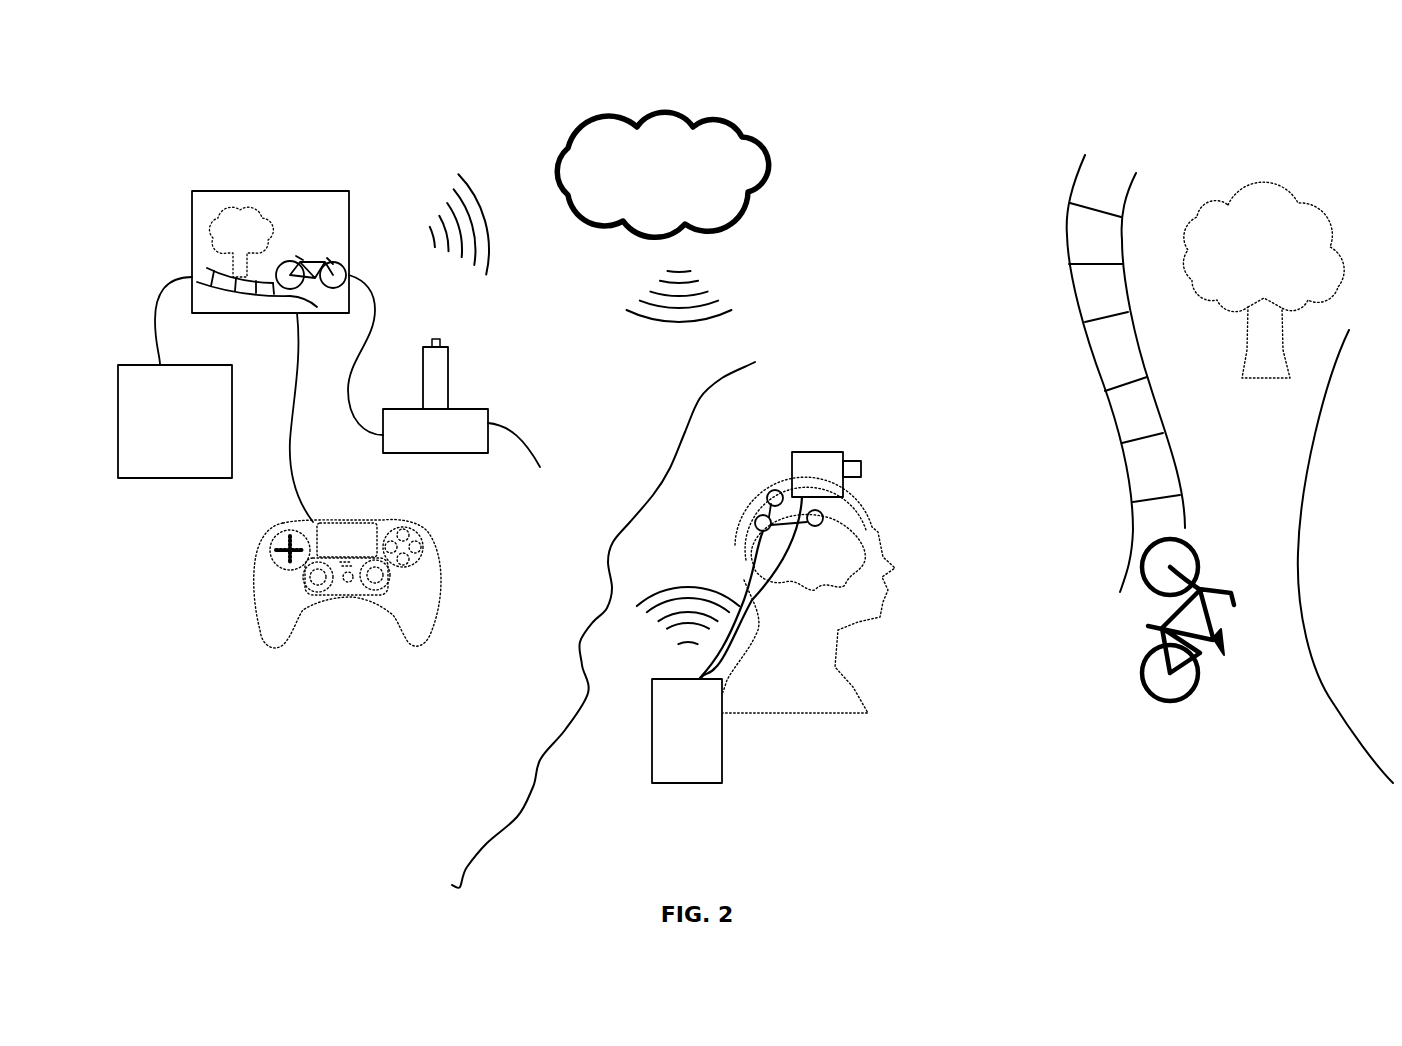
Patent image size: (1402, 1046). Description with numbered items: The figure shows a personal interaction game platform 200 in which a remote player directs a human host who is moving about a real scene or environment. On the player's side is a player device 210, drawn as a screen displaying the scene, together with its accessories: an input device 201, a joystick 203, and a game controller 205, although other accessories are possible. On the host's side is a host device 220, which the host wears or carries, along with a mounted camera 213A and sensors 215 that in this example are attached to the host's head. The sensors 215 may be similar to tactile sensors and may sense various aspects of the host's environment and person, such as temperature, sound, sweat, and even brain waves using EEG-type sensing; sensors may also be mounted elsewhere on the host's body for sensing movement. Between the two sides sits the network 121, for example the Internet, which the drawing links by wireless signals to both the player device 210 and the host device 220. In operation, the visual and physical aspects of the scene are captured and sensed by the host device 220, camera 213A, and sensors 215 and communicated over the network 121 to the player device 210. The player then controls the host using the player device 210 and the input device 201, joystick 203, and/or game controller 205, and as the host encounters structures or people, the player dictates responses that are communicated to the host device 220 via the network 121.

The game platform 200 is at (183, 63).
The player device 210 is at (275, 191).
The input device 201 is at (161, 460).
The network 121 is at (648, 213).
The joystick 203 is at (478, 443).
The game controller 205 is at (433, 643).
The camera 213A is at (813, 452).
The sensors 215 is at (823, 521).
The host device 220 is at (722, 752).